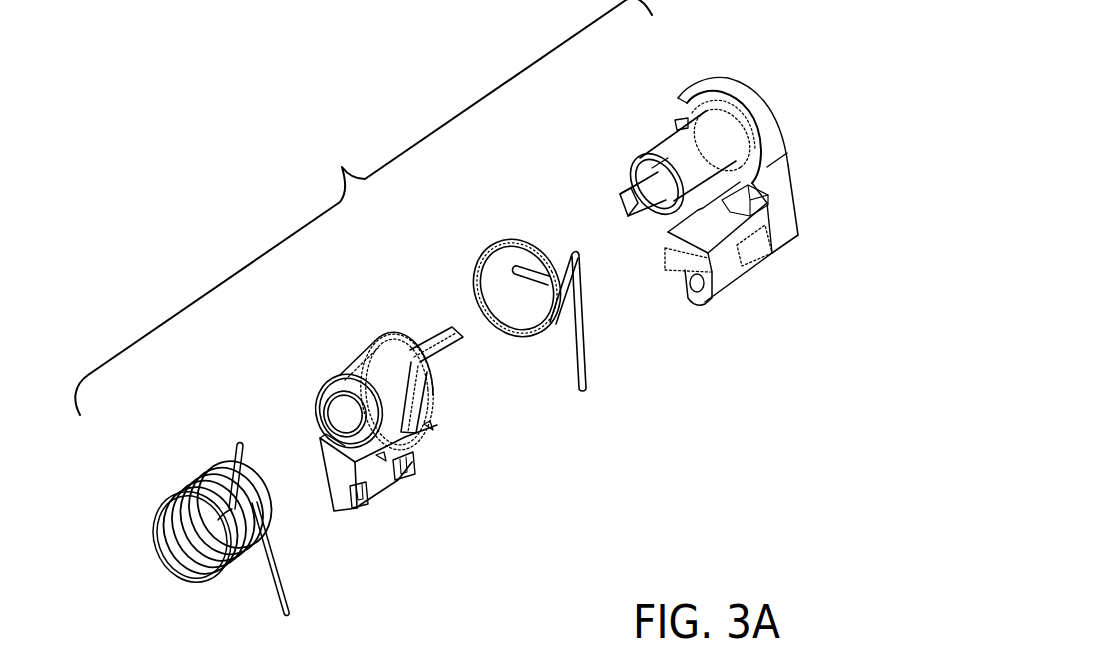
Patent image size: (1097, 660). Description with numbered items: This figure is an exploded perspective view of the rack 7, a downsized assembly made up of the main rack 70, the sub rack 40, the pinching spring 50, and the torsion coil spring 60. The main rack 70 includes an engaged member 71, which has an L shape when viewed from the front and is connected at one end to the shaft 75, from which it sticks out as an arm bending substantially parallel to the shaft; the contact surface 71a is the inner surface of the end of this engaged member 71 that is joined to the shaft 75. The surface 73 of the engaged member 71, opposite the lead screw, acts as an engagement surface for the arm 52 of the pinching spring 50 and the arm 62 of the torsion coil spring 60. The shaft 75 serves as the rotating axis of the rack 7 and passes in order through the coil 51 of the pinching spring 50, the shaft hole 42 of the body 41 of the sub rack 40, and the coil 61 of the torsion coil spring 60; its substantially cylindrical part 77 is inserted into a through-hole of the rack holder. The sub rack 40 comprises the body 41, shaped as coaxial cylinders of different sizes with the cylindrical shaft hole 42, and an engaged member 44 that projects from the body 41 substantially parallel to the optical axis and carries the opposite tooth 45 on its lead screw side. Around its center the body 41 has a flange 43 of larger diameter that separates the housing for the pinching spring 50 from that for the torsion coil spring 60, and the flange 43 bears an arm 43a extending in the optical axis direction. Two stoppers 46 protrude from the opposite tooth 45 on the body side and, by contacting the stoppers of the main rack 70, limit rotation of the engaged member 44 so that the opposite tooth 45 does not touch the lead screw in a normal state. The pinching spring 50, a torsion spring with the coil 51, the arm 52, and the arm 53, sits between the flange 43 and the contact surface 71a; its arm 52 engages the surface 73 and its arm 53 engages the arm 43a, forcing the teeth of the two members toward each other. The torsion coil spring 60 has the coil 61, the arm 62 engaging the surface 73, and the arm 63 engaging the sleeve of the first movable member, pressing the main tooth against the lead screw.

The rack 7 is at (363, 207).
The sub rack 40 is at (391, 416).
The body 41 is at (352, 380).
The shaft hole 42 is at (335, 415).
The flange 43 is at (410, 370).
The arm 43a is at (438, 328).
The engaged member 44 is at (383, 478).
The opposite tooth 45 is at (407, 468).
The stoppers 46 is at (377, 457).
The pinching spring 50 is at (557, 271).
The coil 51 is at (477, 268).
The arm 52 is at (582, 357).
The arm 53 is at (527, 270).
The torsion coil spring 60 is at (246, 510).
The coil 61 is at (197, 577).
The arm 62 is at (290, 600).
The arm 63 is at (238, 447).
The main rack 70 is at (655, 181).
The engaged member 71 is at (727, 182).
The contact surface 71a is at (705, 100).
The surface 73 is at (782, 237).
The shaft 75 is at (660, 151).
The cylindrical part 77 is at (655, 207).